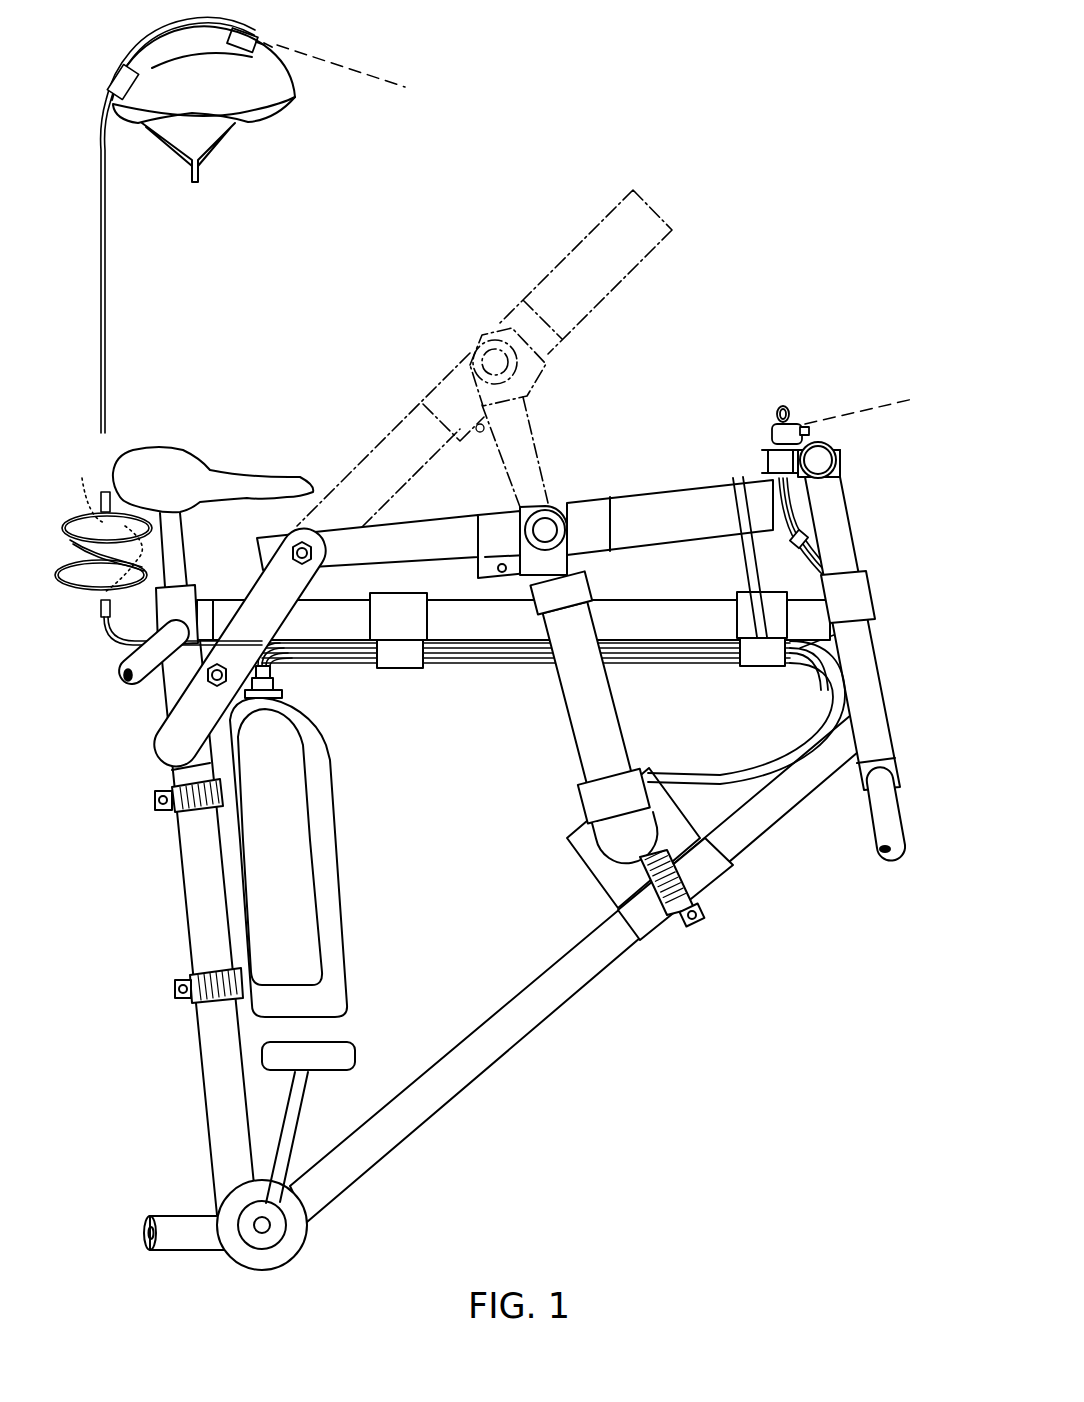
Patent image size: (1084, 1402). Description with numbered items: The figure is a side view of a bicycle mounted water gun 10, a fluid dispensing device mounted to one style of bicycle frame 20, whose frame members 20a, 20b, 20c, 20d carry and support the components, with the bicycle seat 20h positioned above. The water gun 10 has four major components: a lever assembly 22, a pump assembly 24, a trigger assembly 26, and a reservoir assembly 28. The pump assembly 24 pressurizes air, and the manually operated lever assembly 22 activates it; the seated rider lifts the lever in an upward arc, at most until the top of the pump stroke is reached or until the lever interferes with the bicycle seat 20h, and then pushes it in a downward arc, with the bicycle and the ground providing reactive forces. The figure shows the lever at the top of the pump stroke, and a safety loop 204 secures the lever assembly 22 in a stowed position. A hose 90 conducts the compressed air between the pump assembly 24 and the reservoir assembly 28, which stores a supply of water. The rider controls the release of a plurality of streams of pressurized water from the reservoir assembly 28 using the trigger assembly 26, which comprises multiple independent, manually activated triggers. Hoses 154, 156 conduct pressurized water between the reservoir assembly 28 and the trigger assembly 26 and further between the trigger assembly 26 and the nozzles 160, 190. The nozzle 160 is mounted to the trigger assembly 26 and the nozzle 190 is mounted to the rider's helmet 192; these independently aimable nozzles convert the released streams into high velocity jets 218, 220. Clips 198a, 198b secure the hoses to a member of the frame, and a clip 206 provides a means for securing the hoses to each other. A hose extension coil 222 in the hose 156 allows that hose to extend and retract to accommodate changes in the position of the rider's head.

The bicycle mounted water gun 10 is at (717, 124).
The bicycle frame 20 is at (597, 1008).
The frame member 20a is at (223, 1103).
The frame member 20b is at (705, 605).
The frame member 20c is at (440, 1092).
The frame member 20d is at (830, 460).
The bicycle seat 20h is at (183, 462).
The lever assembly 22 is at (596, 468).
The pump assembly 24 is at (563, 737).
The trigger assembly 26 is at (760, 440).
The reservoir assembly 28 is at (350, 839).
The hose 90 is at (733, 773).
The hose 154 is at (830, 653).
The hose 156 is at (107, 267).
The nozzle 160 is at (810, 423).
The nozzle 190 is at (267, 44).
The helmet 192 is at (243, 90).
The clip 198a is at (403, 670).
The clip 198b is at (765, 668).
The safety loop 204 is at (733, 478).
The clip 206 is at (806, 537).
The high velocity jet 218 is at (858, 418).
The high velocity jet 220 is at (357, 70).
The hose extension coil 222 is at (87, 597).